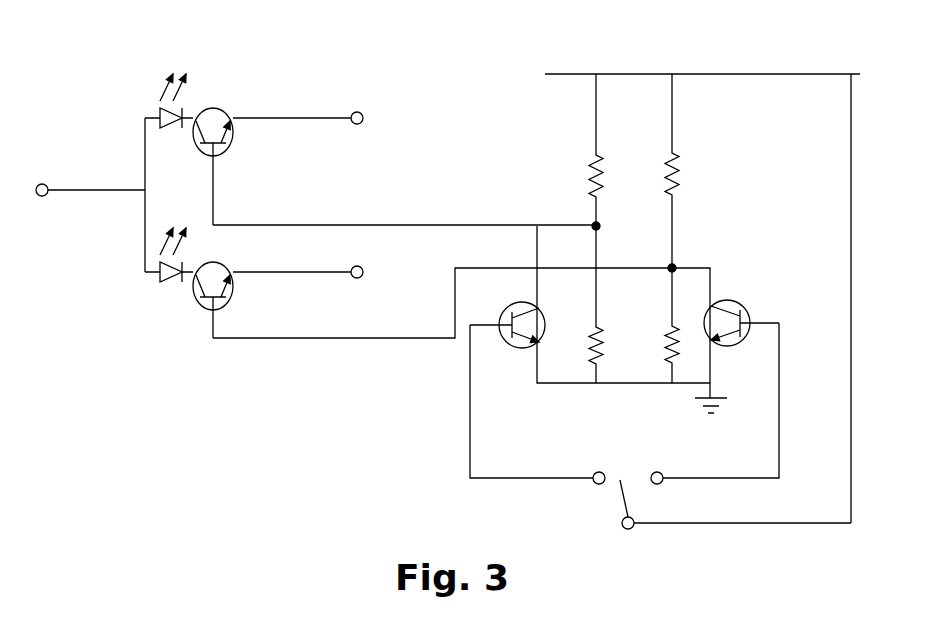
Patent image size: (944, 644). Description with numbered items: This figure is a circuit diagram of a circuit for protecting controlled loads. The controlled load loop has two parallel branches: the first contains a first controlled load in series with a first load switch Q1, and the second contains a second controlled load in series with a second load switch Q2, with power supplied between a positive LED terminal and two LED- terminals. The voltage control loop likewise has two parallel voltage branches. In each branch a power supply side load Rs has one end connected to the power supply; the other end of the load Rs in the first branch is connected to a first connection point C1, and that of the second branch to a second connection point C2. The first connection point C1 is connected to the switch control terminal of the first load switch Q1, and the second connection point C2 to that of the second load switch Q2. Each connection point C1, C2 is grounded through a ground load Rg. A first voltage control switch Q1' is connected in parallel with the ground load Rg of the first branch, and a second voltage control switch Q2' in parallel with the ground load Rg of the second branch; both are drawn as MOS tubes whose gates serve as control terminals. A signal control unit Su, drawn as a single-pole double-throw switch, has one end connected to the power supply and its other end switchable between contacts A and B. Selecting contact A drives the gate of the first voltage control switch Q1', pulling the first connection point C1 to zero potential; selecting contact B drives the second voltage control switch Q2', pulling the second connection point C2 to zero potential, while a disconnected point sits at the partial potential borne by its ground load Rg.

The first load switch Q1 is at (232, 166).
The second load switch Q2 is at (232, 300).
The first voltage control switch Q1' is at (507, 313).
The second voltage control switch Q2' is at (741, 312).
The power supply side load Rs is at (649, 171).
The ground load Rg is at (648, 304).
The first connection point C1 is at (612, 228).
The second connection point C2 is at (686, 258).
The signal control unit Su is at (638, 504).
The contact A is at (599, 465).
The contact B is at (657, 465).
The LED− LED- is at (337, 184).